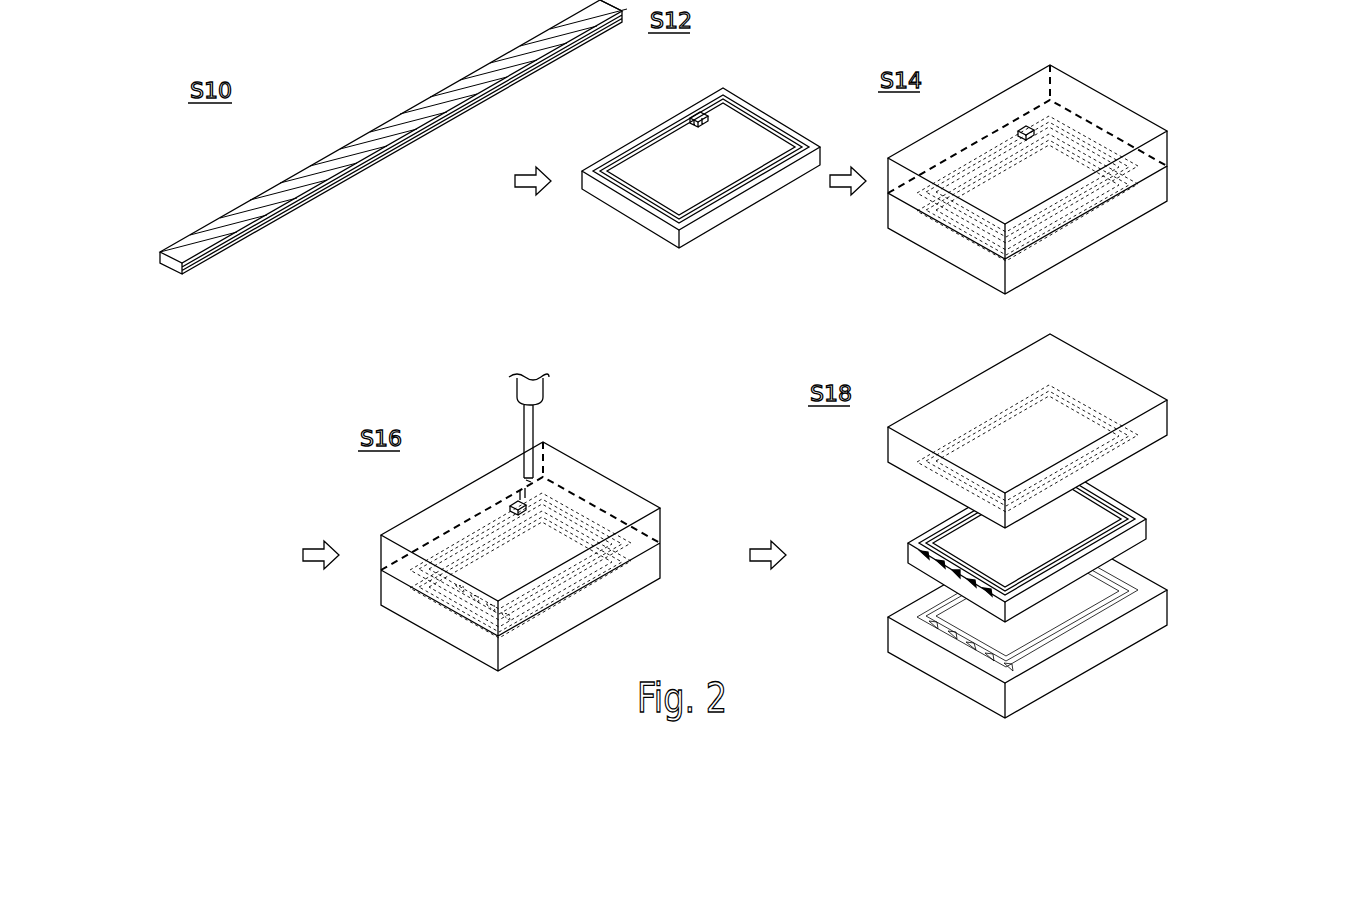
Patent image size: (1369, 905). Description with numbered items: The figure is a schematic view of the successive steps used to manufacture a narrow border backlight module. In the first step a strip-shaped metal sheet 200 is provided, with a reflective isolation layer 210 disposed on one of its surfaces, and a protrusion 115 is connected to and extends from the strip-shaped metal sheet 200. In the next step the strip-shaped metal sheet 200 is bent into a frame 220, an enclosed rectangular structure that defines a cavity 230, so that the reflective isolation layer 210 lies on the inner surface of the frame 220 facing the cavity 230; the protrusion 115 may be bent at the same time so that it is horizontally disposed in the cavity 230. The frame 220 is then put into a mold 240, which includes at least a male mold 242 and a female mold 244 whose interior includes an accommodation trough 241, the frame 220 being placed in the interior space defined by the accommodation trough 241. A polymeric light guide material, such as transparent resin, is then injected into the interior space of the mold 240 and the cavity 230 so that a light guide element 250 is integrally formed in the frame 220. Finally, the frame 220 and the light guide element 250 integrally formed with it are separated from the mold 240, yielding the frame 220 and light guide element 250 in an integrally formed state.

The protrusion 115 is at (699, 111).
The strip-shaped metal sheet 200 is at (353, 178).
The reflective isolation layer 210 is at (405, 121).
The frame 220 is at (675, 100).
The cavity 230 is at (720, 172).
The mold 240 is at (428, 654).
The accommodation trough 241 is at (995, 124).
The male mold 242 is at (1160, 190).
The female mold 244 is at (1160, 150).
The light guide element 250 is at (572, 528).